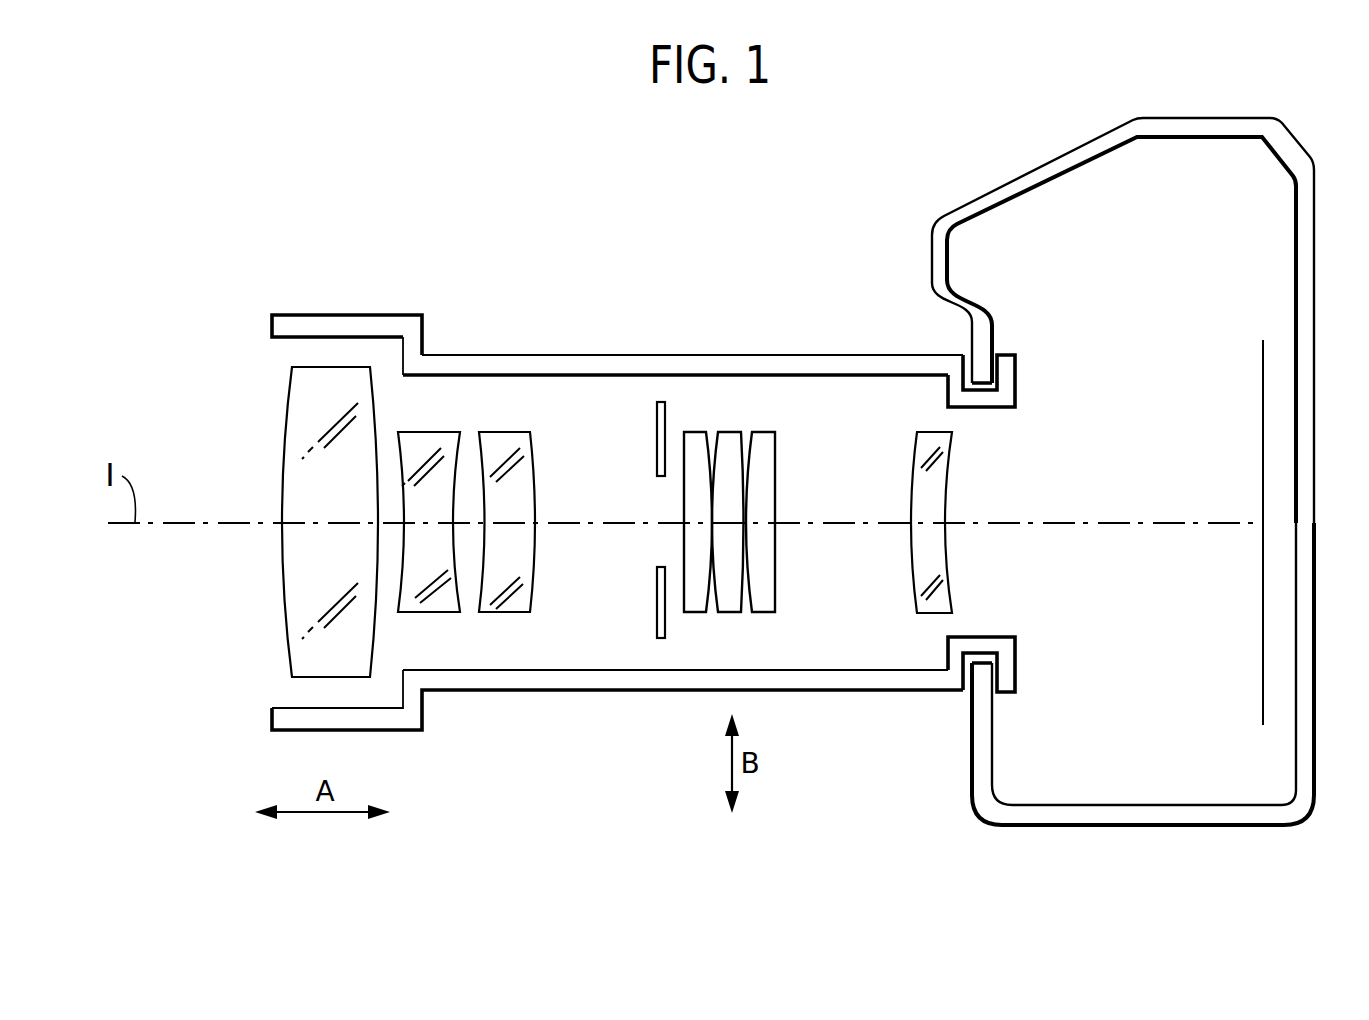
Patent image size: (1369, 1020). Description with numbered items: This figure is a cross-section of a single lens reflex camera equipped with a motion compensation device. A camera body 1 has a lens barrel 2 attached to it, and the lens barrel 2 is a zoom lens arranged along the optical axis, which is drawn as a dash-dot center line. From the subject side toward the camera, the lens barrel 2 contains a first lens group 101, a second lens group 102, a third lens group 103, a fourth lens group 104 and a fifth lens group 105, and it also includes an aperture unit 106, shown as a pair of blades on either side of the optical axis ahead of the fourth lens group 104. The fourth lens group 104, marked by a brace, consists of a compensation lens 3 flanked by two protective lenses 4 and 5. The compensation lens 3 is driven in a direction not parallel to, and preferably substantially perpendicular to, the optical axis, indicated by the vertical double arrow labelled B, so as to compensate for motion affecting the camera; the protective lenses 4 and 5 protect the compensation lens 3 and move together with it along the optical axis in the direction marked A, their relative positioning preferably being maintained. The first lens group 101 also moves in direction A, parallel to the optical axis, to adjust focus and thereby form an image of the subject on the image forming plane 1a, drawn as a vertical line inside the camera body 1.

The camera body 1 is at (1300, 150).
The image forming plane 1a is at (1263, 650).
The lens barrel 2 is at (312, 315).
The compensation lens 3 is at (725, 447).
The protective lens 4 is at (762, 447).
The protective lens 5 is at (697, 447).
The first lens group 101 is at (287, 632).
The second lens group 102 is at (441, 616).
The third lens group 103 is at (497, 616).
The fourth lens group 104 is at (662, 298).
The fifth lens group 105 is at (928, 613).
The aperture unit 106 is at (657, 621).